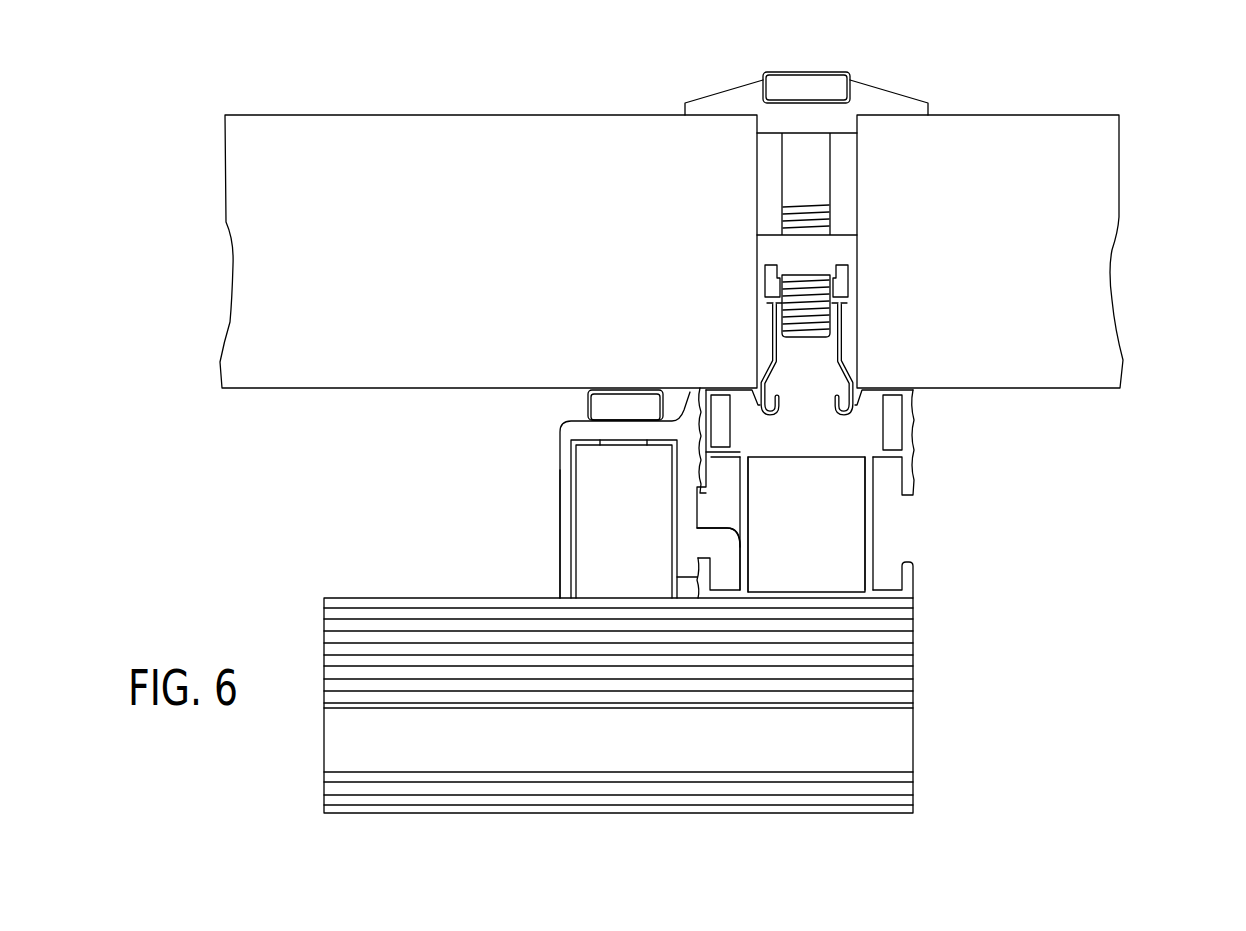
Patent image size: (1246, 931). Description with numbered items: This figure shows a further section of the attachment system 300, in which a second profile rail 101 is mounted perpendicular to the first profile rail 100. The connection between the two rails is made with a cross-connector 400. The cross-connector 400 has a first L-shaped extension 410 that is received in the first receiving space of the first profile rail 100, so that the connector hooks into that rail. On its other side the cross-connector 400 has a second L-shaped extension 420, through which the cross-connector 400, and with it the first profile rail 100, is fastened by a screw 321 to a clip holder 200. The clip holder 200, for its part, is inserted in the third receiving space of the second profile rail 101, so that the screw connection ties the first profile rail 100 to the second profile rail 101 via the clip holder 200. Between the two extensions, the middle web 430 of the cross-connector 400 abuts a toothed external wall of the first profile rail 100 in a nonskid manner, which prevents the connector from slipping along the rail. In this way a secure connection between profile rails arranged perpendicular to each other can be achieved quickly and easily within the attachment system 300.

The attachment system 300 is at (1168, 97).
The screw 321 is at (603, 402).
The cross-connector 400 is at (544, 438).
The second L-shaped extension 420 is at (565, 482).
The clip holder 200 is at (598, 527).
The middle web 430 is at (687, 405).
The first profile rail 100 is at (837, 527).
The first L-shaped extension 410 is at (722, 548).
The second profile rail 101 is at (893, 738).